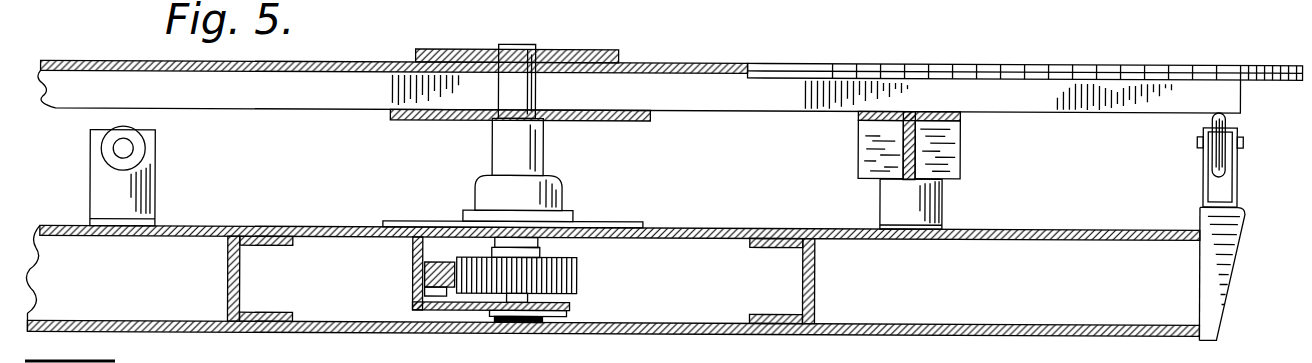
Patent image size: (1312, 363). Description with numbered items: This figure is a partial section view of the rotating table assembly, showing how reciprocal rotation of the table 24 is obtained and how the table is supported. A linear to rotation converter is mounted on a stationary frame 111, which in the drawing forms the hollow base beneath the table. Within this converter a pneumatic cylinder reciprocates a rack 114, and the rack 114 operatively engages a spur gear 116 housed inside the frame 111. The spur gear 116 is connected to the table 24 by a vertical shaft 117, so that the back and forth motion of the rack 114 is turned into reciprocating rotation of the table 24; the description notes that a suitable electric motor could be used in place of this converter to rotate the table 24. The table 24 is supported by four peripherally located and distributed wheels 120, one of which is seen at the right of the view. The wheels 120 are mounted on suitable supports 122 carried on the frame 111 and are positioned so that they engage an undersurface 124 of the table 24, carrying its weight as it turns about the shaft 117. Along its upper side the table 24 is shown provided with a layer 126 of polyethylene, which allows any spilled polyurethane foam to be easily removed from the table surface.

The table 24 is at (1053, 61).
The stationary frame 111 is at (702, 228).
The rack 114 is at (413, 273).
The spur gear 116 is at (577, 275).
The shaft 117 is at (515, 92).
The wheels 120 is at (1215, 158).
The supports 122 is at (1237, 176).
The undersurface 124 is at (1057, 112).
The layer of polyethylene 126 is at (695, 62).